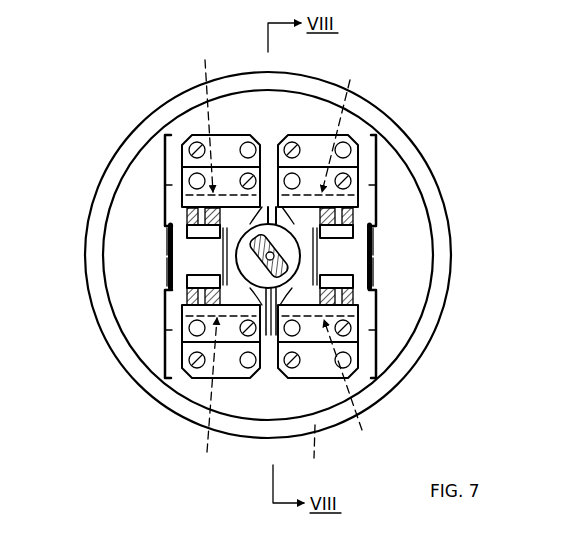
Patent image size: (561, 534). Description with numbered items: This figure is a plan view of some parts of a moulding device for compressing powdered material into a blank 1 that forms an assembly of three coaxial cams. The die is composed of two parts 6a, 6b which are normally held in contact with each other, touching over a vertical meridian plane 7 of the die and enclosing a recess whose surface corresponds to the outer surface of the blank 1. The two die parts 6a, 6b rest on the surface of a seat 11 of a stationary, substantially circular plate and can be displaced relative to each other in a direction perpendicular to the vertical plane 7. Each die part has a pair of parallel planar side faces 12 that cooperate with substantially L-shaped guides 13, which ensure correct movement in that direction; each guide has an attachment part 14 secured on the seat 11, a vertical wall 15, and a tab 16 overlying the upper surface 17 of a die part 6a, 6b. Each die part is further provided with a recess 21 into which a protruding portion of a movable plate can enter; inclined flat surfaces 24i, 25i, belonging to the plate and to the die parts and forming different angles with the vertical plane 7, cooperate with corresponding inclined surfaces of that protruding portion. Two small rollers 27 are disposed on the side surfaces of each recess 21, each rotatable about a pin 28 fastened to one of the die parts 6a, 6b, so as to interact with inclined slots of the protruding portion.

The blank 1 is at (257, 268).
The die part 6a is at (234, 226).
The die part 6b is at (303, 228).
The vertical meridian plane 7 is at (273, 224).
The seat 11 is at (263, 432).
The planar side faces 12 is at (289, 255).
The guides 13 is at (177, 170).
The attachment part 14 is at (205, 148).
The vertical wall 15 is at (167, 186).
The tab 16 is at (176, 257).
The upper surface 17 is at (271, 340).
The recess 21 is at (167, 257).
The inclined flat surface 24i is at (168, 240).
The inclined flat surface 25i is at (168, 276).
The small rollers 27 is at (205, 230).
The pin 28 is at (188, 212).